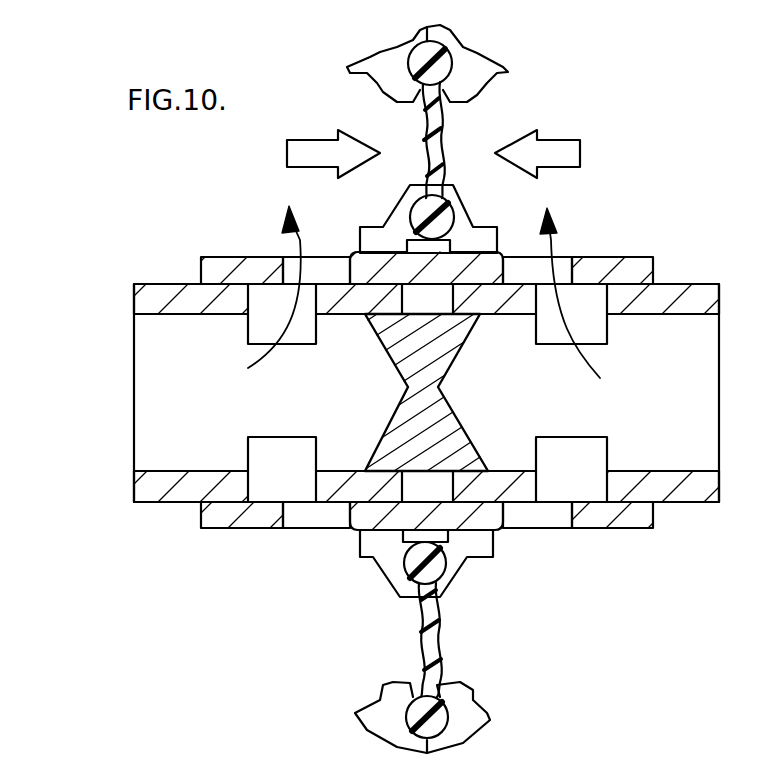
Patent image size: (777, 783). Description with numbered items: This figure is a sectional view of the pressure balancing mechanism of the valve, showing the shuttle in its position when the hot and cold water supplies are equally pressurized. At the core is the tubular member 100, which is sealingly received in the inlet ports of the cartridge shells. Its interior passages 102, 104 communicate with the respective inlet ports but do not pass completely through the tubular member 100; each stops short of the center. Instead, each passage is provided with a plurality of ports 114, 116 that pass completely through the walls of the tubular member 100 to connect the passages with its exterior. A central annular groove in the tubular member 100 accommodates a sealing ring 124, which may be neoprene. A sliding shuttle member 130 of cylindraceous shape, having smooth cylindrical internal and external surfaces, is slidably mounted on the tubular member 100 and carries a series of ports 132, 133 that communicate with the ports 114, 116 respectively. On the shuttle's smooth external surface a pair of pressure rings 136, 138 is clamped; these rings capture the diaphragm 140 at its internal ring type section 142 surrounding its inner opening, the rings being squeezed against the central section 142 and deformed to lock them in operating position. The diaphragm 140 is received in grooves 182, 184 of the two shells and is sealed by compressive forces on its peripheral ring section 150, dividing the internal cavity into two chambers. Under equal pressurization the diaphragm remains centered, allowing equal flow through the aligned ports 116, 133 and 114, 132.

The tubular member 100 is at (700, 286).
The interior passage 102 is at (155, 410).
The interior passage 104 is at (708, 383).
The ports 114 is at (305, 328).
The ports 116 is at (596, 325).
The sealing ring 124 is at (443, 305).
The sliding shuttle member 130 is at (625, 259).
The shuttle ports 132 is at (332, 262).
The shuttle ports 133 is at (558, 255).
The pressure ring 136 is at (384, 573).
The pressure ring 138 is at (468, 578).
The diaphragm 140 is at (442, 128).
The internal ring type section 142 is at (412, 538).
The peripheral ring section 150 is at (437, 718).
The groove 182 is at (378, 700).
The groove 184 is at (453, 700).